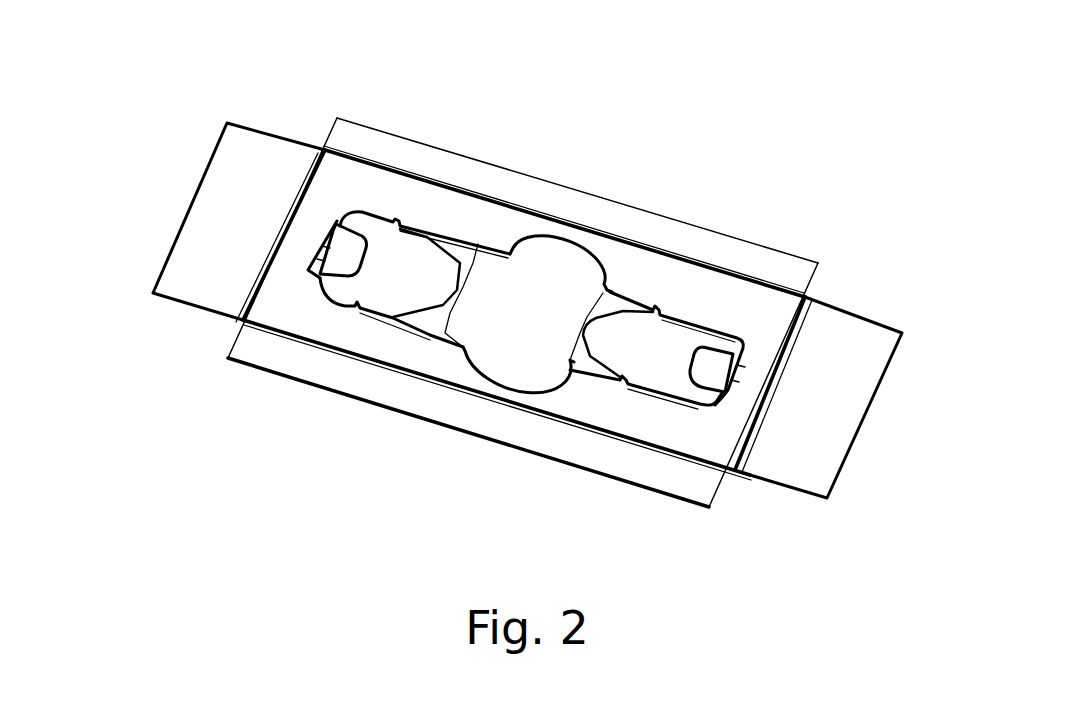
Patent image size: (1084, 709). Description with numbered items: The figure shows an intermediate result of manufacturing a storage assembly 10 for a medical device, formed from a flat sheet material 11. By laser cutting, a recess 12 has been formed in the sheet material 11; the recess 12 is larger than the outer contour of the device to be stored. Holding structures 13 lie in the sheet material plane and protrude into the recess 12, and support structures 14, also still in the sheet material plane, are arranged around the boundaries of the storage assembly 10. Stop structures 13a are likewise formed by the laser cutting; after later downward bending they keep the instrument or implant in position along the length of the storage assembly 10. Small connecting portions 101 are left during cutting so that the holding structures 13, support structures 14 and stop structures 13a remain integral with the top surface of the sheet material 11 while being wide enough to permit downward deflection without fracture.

The storage assembly 10 is at (777, 132).
The sheet material 11 is at (357, 185).
The recess 12 is at (410, 253).
The holding structure 13 is at (478, 243).
The stop structure 13a is at (350, 242).
The support structure 14 is at (197, 253).
The connecting portion 101 is at (405, 377).